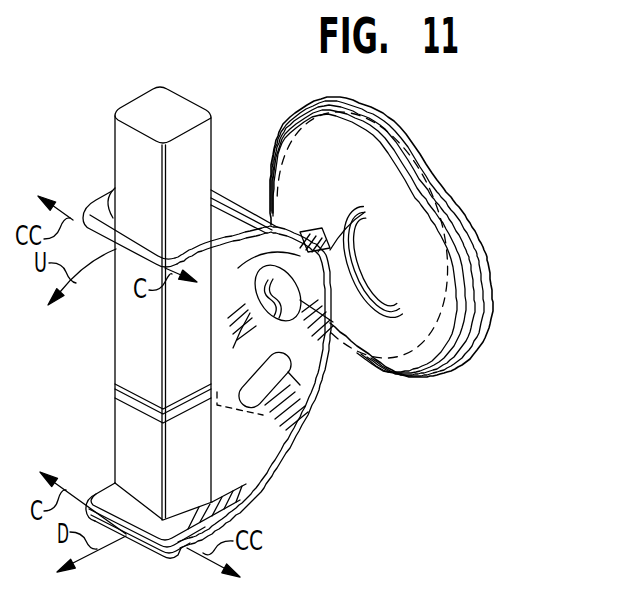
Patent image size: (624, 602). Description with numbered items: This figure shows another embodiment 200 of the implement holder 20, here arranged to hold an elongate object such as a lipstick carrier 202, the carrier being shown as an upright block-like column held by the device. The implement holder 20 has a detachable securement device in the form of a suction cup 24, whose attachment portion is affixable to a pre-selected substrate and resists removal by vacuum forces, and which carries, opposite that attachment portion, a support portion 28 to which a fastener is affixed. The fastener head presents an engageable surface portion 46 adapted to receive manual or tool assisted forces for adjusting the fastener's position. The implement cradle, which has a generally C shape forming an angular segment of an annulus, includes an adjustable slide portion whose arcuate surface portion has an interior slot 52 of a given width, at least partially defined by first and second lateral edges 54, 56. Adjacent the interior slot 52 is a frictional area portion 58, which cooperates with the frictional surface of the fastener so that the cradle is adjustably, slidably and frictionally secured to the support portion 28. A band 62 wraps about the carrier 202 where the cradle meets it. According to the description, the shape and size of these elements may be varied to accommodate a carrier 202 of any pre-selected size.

The implement holder 20 is at (12, 83).
The lipstick carrier 202 is at (190, 106).
The mounting band 62 is at (100, 193).
The another embodiment of implement holder 200 is at (400, 406).
The suction cup 24 is at (432, 230).
The support portion 28 is at (330, 250).
The frictional area portion 58 is at (255, 258).
The engageable surface portion 46 is at (325, 300).
The first lateral edge 54 is at (257, 361).
The interior slot 52 is at (290, 380).
The second lateral edge 56 is at (288, 414).